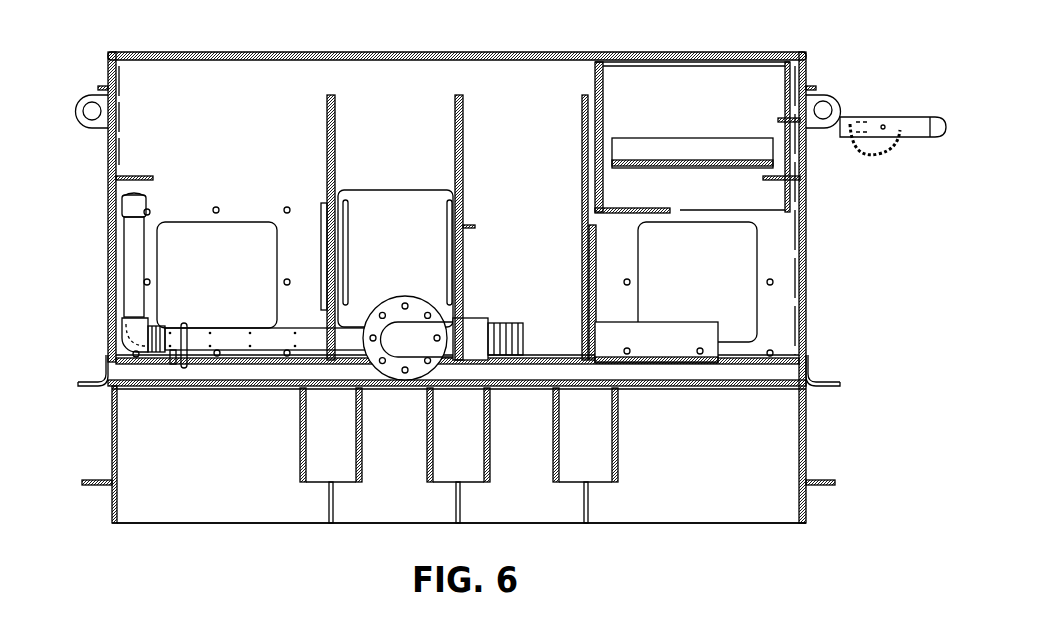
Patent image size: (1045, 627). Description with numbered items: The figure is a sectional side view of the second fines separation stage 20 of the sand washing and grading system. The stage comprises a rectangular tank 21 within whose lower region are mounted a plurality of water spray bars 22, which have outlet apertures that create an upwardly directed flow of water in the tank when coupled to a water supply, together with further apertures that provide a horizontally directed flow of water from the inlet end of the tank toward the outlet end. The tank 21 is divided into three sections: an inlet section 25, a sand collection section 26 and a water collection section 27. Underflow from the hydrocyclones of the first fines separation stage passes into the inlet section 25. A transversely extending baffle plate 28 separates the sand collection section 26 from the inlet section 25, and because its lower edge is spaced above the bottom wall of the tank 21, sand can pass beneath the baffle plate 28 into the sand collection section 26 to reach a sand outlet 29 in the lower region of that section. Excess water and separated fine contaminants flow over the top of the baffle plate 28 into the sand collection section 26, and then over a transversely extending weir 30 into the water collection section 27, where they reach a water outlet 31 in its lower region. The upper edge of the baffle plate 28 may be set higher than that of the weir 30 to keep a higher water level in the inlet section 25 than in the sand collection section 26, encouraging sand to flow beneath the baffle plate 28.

The second fines separation stage 20 is at (836, 234).
The rectangular tank 21 is at (108, 138).
The water spray bars 22 is at (218, 340).
The inlet section 25 is at (165, 130).
The sand collection section 26 is at (388, 128).
The water collection section 27 is at (510, 128).
The baffle plate 28 is at (327, 138).
The sand outlet 29 is at (382, 420).
The weir 30 is at (462, 120).
The water outlet 31 is at (518, 420).